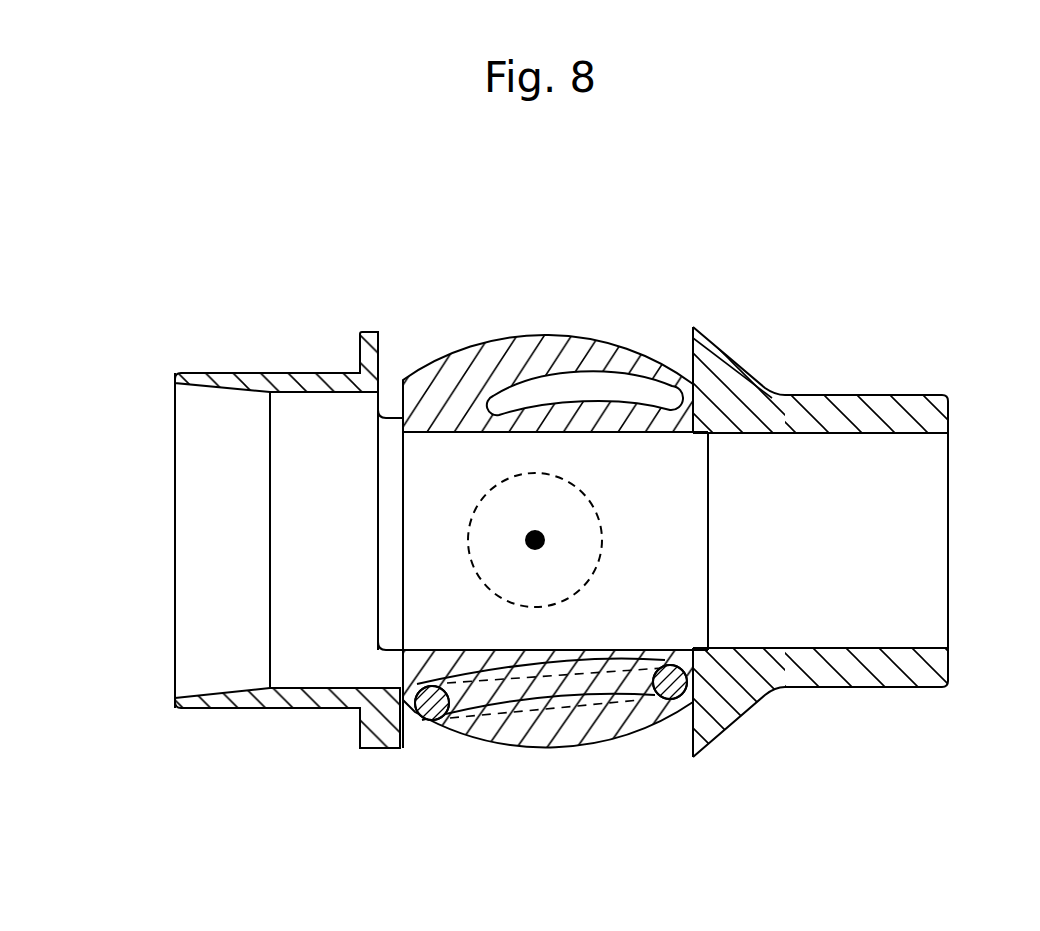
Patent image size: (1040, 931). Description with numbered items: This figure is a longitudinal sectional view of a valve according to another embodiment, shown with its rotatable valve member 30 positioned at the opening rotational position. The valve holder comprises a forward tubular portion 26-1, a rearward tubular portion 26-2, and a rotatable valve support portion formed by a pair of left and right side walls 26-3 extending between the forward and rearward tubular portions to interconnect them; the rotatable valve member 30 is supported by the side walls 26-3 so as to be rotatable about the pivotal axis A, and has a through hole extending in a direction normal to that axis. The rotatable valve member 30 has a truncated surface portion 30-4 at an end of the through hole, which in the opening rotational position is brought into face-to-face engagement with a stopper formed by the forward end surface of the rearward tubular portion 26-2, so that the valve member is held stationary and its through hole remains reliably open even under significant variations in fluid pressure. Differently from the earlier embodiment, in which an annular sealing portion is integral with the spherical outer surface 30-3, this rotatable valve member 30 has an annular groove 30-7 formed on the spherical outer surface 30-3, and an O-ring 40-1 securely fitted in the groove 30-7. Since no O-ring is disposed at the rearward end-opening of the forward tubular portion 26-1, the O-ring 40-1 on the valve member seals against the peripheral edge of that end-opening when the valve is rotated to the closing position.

The rotatable valve member 30 is at (451, 503).
The spherical outer surface 30-3 is at (519, 337).
The truncated surface portion 30-4 is at (403, 462).
The annular groove 30-7 is at (577, 728).
The forward tubular portion 26-1 is at (907, 690).
The rearward tubular portion 26-2 is at (232, 710).
The side wall 26-3 is at (378, 535).
The O-ring 40-1 is at (698, 738).
The pivotal axis A is at (528, 532).